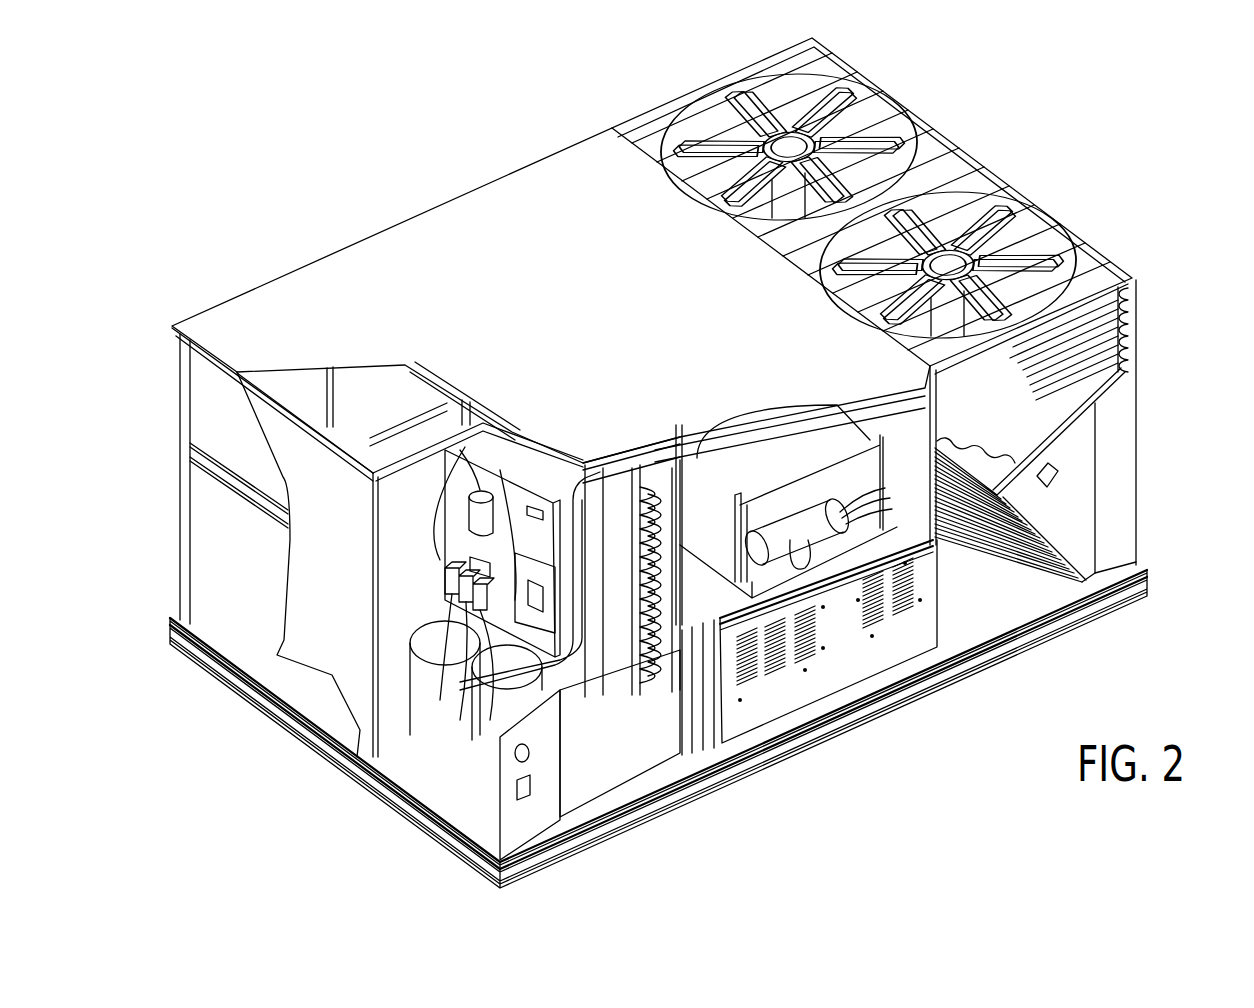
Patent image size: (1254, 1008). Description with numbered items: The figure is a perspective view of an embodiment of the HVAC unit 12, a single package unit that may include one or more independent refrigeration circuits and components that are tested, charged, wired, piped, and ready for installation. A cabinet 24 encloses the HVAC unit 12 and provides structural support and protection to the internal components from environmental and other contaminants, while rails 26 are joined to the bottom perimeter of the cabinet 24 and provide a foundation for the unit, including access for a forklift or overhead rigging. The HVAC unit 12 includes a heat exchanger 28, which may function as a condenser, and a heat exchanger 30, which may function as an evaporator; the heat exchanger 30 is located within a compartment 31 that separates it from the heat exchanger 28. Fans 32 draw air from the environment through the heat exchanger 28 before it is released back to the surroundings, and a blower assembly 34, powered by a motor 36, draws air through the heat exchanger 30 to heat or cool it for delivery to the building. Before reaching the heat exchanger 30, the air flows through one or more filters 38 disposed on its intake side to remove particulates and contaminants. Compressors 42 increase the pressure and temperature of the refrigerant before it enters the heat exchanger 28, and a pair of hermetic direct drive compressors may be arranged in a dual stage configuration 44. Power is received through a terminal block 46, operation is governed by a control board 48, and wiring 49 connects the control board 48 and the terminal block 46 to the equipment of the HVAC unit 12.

The HVAC unit 12 is at (366, 142).
The cabinet 24 is at (218, 590).
The rails 26 is at (250, 688).
The heat exchanger 28 is at (1146, 329).
The heat exchanger 30 is at (660, 475).
The compartment 31 is at (698, 492).
The fans 32 is at (890, 203).
The blower assembly 34 is at (860, 473).
The motor 36 is at (802, 455).
The filters 38 is at (621, 600).
The compressors 42 is at (413, 673).
The dual stage configuration 44 is at (464, 607).
The terminal block 46 is at (443, 560).
The control board 48 is at (535, 578).
The wiring 49 is at (660, 492).